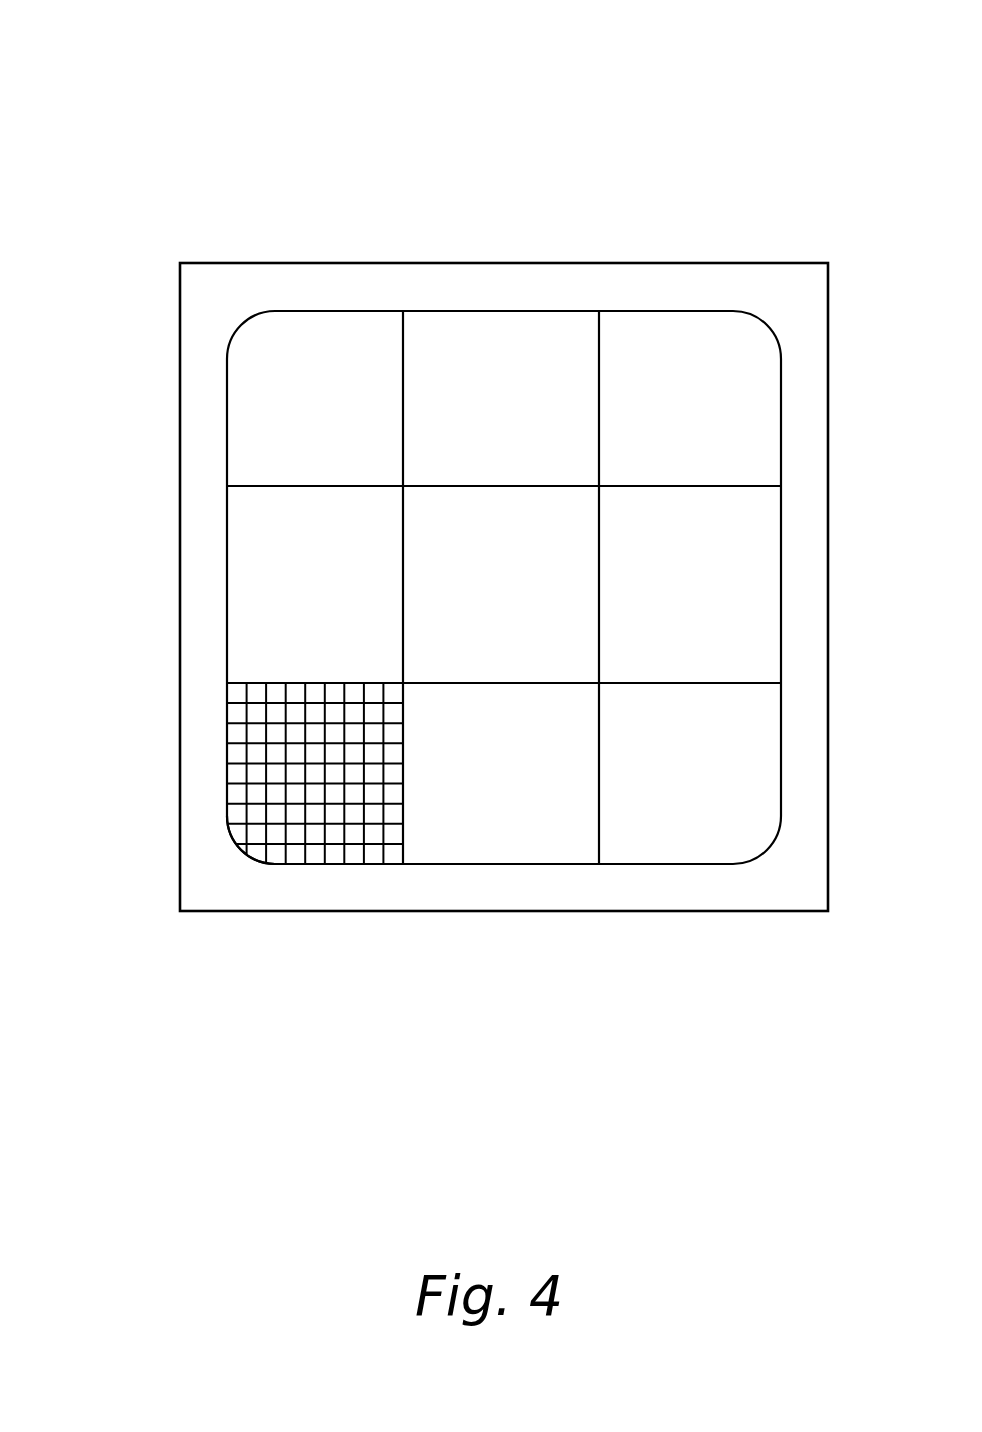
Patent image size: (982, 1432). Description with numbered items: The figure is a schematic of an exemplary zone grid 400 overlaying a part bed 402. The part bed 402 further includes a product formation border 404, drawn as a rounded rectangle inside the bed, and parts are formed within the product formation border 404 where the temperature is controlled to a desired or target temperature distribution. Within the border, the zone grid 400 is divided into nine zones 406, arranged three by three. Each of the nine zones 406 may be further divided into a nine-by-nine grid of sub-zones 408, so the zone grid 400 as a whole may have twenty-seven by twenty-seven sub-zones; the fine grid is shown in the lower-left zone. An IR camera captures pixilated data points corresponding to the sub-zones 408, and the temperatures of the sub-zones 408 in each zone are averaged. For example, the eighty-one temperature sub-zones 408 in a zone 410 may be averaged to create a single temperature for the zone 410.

The zone grid 400 is at (146, 68).
The part bed 402 is at (225, 263).
The product formation border 404 is at (712, 311).
The zone 406 is at (516, 337).
The sub-zone 408 is at (355, 837).
The zone 410 is at (298, 882).